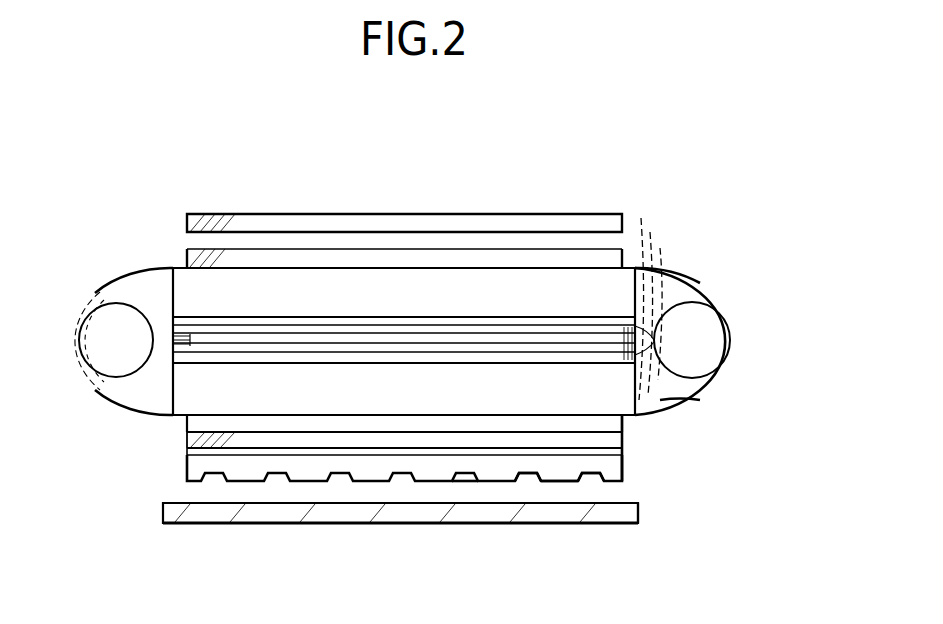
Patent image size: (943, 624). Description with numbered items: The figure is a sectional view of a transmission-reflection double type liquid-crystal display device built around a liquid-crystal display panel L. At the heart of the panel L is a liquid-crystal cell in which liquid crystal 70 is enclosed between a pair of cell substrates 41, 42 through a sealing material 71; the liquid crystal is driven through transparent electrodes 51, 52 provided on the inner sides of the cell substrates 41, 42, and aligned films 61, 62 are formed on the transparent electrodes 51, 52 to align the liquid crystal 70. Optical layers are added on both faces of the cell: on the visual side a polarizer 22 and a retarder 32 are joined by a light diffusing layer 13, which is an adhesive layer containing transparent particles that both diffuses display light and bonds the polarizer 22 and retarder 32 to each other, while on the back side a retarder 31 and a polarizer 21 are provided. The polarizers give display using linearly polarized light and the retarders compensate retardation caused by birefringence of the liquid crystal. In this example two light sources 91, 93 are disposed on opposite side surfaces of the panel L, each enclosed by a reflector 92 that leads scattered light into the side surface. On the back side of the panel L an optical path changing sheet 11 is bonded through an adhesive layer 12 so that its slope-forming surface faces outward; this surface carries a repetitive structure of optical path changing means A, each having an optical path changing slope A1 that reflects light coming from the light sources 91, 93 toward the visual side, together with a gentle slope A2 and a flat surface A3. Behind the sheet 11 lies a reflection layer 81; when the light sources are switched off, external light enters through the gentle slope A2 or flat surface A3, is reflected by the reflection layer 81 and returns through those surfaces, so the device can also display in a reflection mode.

The liquid-crystal display panel L is at (746, 218).
The reflector 92 is at (105, 282).
The light source 91 is at (107, 372).
The light source 93 is at (720, 333).
The polarizer 22 is at (495, 231).
The light diffusing layer 13 is at (548, 243).
The retarder 32 is at (596, 228).
The liquid crystal 70 is at (448, 305).
The transparent electrode 51 is at (650, 423).
The cell substrate 41 is at (668, 449).
The retarder 31 is at (665, 471).
The polarizer 21 is at (665, 497).
The adhesive layer 12 is at (650, 494).
The optical path changing sheet 11 is at (640, 526).
The reflection layer 81 is at (398, 526).
The cell substrate 42 is at (659, 294).
The transparent electrode 52 is at (659, 236).
The aligned film 62 is at (668, 256).
The sealing material 71 is at (688, 281).
The aligned film 61 is at (682, 404).
The optical path changing means A is at (464, 494).
The optical path changing slope A1 is at (530, 484).
The gentle slope A2 is at (602, 484).
The flat surface A3 is at (572, 500).